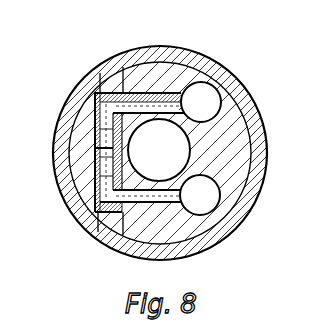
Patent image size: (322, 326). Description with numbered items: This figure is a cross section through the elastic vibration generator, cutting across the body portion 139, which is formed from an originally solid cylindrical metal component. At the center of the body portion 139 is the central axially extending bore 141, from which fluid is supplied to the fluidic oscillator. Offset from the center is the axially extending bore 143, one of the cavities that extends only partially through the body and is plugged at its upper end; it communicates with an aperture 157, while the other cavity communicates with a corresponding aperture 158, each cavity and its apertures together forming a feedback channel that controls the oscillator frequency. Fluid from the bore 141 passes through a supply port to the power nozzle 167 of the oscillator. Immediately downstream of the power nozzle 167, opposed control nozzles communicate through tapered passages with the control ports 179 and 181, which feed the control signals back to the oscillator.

The aperture 157 is at (170, 250).
The aperture 158 is at (157, 92).
The control port 181 is at (104, 107).
The power nozzle 167 is at (100, 150).
The control port 179 is at (110, 212).
The central axially extending bore 141 is at (191, 151).
The axially extending bore 143 is at (217, 87).
The body portion 139 is at (221, 203).